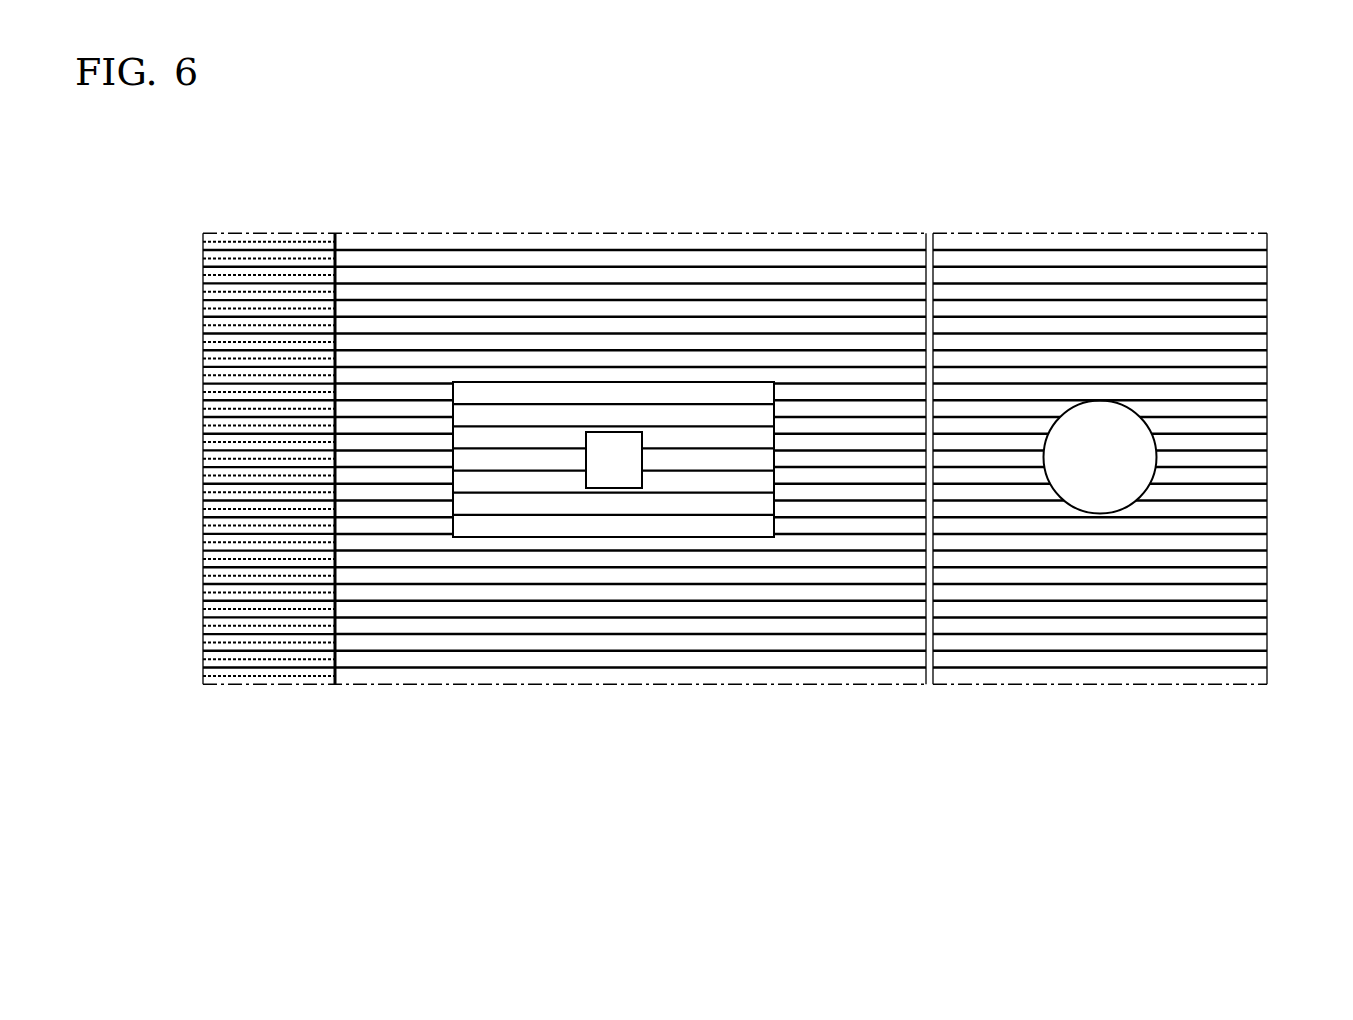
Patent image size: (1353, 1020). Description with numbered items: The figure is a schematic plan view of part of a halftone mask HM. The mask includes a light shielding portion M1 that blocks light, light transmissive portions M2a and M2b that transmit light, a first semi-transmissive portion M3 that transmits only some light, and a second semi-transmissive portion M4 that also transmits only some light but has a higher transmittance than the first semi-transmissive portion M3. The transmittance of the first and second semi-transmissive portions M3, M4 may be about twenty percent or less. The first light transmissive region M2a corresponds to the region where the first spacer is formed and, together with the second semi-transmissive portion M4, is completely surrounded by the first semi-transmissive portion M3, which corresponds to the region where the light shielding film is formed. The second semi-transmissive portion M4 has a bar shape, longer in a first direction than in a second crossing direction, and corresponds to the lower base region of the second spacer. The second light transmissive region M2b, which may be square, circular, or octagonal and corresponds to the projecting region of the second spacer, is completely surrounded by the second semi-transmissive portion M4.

The halftone mask HM is at (1253, 198).
The light shielding portion M1 is at (269, 238).
The first light transmissive region M2a is at (1110, 402).
The second light transmissive region M2b is at (616, 438).
The first semi-transmissive portion M3 is at (780, 243).
The second semi-transmissive portion M4 is at (706, 392).